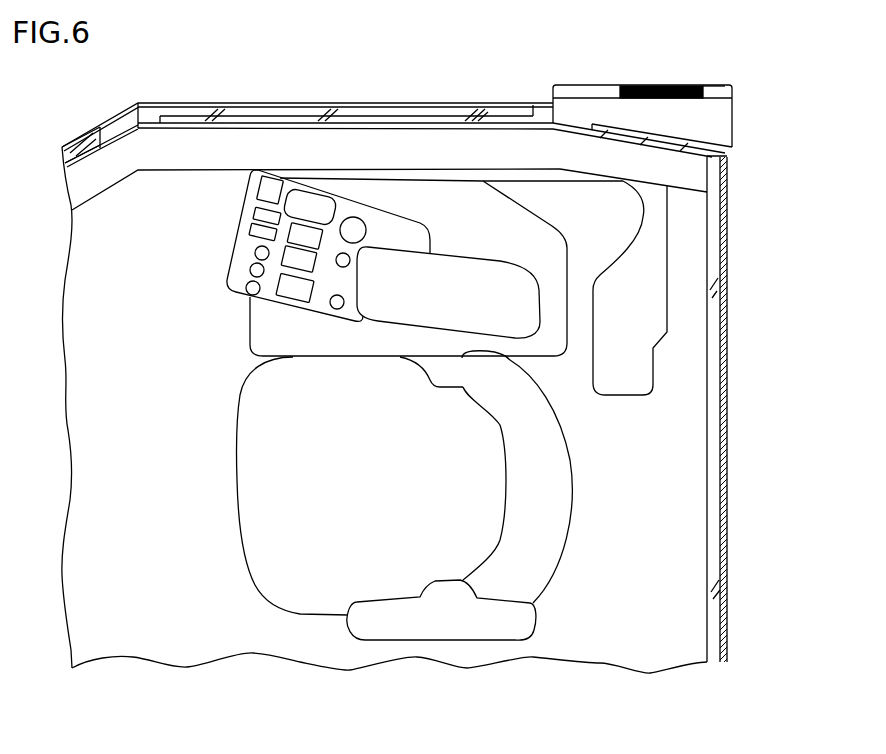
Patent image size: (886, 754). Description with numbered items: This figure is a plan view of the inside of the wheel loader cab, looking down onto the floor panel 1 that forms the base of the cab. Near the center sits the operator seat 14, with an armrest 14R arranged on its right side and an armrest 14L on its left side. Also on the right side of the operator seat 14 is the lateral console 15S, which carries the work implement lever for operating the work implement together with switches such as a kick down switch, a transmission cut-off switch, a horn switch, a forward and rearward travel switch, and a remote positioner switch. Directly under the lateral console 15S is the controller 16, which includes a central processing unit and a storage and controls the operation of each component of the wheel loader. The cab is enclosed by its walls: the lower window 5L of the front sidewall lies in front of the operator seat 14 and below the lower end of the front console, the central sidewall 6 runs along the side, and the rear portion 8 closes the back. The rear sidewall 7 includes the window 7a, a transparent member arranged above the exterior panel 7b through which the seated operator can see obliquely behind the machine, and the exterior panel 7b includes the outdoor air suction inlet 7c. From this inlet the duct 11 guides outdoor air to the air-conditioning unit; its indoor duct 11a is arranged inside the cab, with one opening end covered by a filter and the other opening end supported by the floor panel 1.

The floor panel 1 is at (186, 240).
The lower window 5L is at (74, 148).
The central sidewall 6 is at (308, 106).
The rear sidewall 7 is at (684, 92).
The window 7a is at (687, 132).
The exterior panel 7b is at (712, 92).
The outdoor air suction inlet 7c is at (620, 92).
The rear portion 8 is at (728, 415).
The duct 11 is at (713, 288).
The indoor duct 11a is at (643, 315).
The operator seat 14 is at (317, 588).
The armrest 14L is at (467, 628).
The armrest 14R is at (473, 250).
The lateral console 15S is at (347, 212).
The controller 16 is at (440, 203).